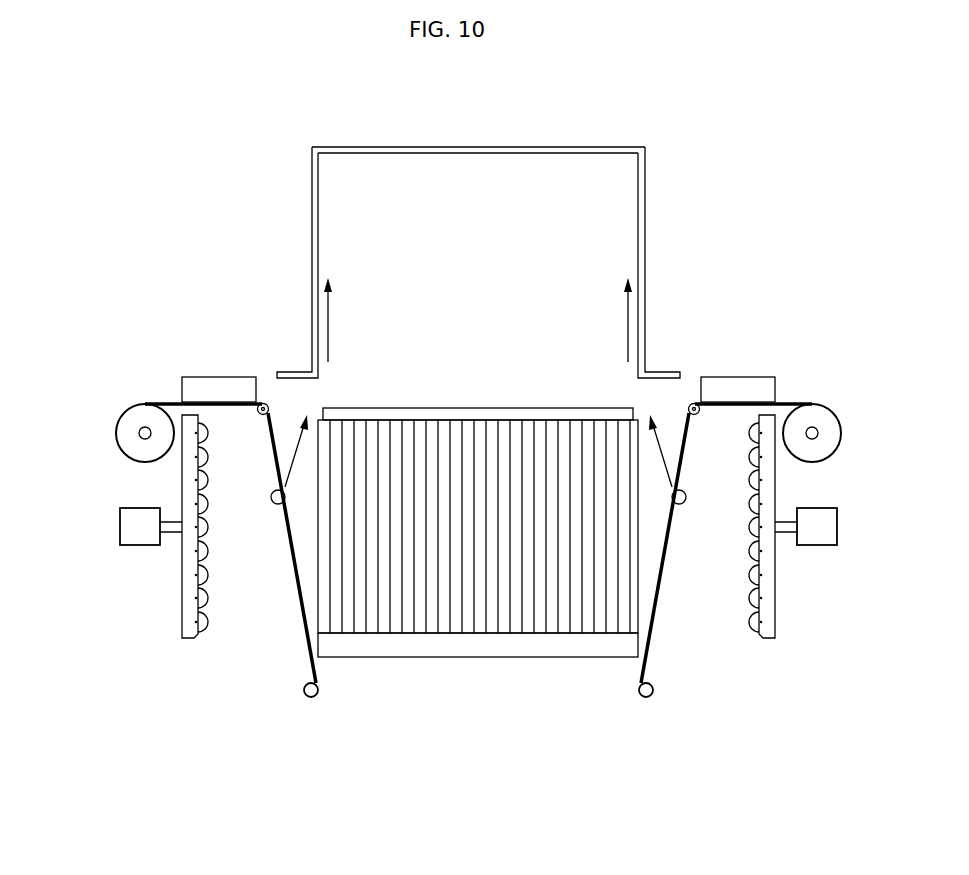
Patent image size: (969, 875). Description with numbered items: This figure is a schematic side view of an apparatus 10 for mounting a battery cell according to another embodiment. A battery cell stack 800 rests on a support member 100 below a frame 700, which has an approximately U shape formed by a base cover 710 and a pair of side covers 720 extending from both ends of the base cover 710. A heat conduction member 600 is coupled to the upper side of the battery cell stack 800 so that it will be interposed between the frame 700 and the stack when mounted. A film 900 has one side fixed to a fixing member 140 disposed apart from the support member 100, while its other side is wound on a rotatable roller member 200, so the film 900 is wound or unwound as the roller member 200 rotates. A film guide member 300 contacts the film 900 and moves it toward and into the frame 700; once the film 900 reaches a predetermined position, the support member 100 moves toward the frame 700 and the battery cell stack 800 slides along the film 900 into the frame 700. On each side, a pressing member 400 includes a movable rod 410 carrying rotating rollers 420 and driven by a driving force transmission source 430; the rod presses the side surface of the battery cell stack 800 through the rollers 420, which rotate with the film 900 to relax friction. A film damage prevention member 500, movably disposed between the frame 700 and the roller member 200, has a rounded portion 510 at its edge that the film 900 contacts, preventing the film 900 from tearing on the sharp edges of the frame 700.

The apparatus for mounting a battery cell 10 is at (300, 770).
The support member 100 is at (421, 668).
The fixing member 140 is at (303, 691).
The roller member 200 is at (116, 433).
The film guide member 300 is at (271, 497).
The pressing member 400 is at (150, 682).
The movable rod 410 is at (182, 615).
The rotating roller 420 is at (210, 622).
The driving force transmission source 430 is at (120, 528).
The film damage prevention member 500 is at (202, 356).
The rounded portion 510 is at (253, 401).
The heat conduction member 600 is at (522, 408).
The frame 700 is at (672, 126).
The base cover 710 is at (601, 147).
The side cover 720 is at (646, 188).
The battery cell stack 800 is at (578, 618).
The film 900 is at (295, 567).